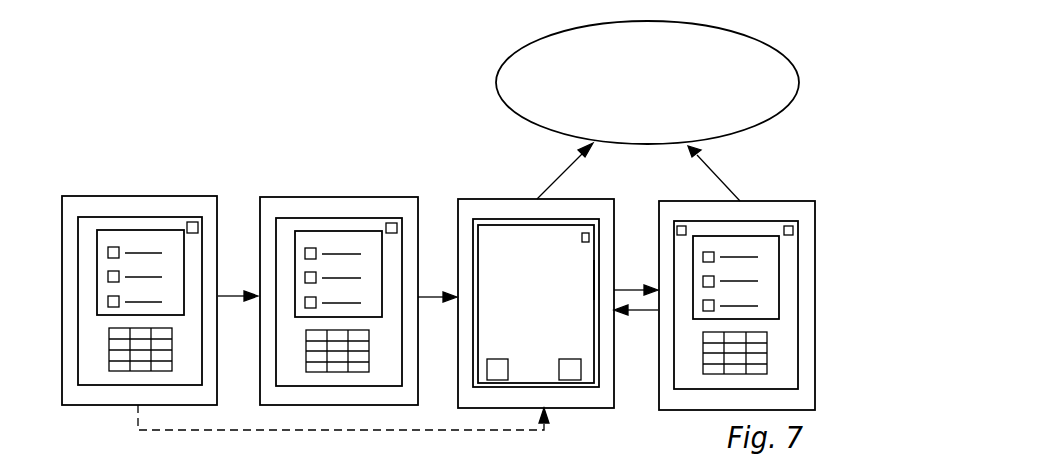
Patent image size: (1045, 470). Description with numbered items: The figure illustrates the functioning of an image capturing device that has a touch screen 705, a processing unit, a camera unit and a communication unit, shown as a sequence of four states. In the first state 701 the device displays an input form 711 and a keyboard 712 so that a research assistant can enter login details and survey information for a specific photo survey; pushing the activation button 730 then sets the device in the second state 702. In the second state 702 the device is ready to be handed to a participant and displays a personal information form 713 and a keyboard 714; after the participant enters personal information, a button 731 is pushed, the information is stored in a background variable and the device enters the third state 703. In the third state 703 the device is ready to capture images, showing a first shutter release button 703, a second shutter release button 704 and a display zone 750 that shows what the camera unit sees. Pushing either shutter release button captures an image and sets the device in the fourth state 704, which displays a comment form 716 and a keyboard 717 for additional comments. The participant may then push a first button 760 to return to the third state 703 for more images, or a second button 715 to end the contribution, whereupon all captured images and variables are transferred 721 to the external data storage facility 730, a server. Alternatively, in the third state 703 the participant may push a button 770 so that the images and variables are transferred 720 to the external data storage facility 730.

The first state 701 is at (158, 186).
The second state 702 is at (364, 186).
The third state 703 is at (599, 190).
The fourth state 704 is at (799, 188).
The touch screen 705 is at (426, 267).
The input form 711 is at (175, 272).
The keyboard 712 is at (181, 346).
The personal information form 713 is at (373, 274).
The keyboard 714 is at (380, 349).
The second button 715 is at (820, 209).
The comment form 716 is at (774, 274).
The keyboard 717 is at (782, 347).
The transfer 720 is at (540, 163).
The transfer 721 is at (738, 171).
The external data storage facility 730 is at (476, 116).
The button 731 is at (377, 189).
The display zone 750 is at (562, 275).
The first button 760 is at (653, 208).
The button 770 is at (616, 220).